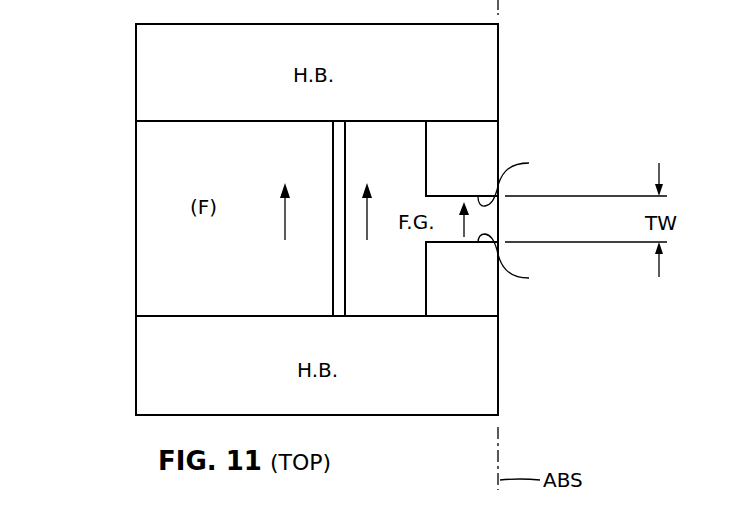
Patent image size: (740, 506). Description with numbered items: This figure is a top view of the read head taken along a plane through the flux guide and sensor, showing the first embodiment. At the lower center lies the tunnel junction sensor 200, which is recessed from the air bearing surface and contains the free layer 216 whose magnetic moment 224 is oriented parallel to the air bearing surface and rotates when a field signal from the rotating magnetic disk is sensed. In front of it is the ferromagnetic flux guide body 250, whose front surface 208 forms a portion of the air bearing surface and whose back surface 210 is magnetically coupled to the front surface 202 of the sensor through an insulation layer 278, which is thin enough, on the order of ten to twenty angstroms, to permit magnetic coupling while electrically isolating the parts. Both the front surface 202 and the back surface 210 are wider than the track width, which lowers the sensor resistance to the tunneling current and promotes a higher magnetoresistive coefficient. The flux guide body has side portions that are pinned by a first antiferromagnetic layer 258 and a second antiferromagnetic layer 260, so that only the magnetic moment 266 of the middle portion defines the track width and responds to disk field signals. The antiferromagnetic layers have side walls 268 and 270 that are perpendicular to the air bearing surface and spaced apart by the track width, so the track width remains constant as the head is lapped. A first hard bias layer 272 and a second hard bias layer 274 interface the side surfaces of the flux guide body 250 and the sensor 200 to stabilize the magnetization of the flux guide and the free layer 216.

The tunnel junction sensor 200 is at (221, 320).
The front surface of the tunnel junction sensor 202 is at (337, 154).
The front surface of the flux guide 208 is at (498, 210).
The back surface of the flux guide 210 is at (347, 263).
The free layer 216 is at (146, 155).
The magnetic moment of the free layer 224 is at (285, 216).
The flux guide body 250 is at (390, 320).
The first antiferromagnetic layer 258 is at (462, 316).
The second antiferromagnetic layer 260 is at (466, 130).
The magnetic moment of the middle portion 266 is at (367, 222).
The side wall of the first antiferromagnetic layer 268 is at (523, 262).
The side wall of the second antiferromagnetic layer 270 is at (523, 178).
The first hard bias layer 272 is at (146, 350).
The second hard bias layer 274 is at (146, 50).
The insulation layer 278 is at (333, 292).